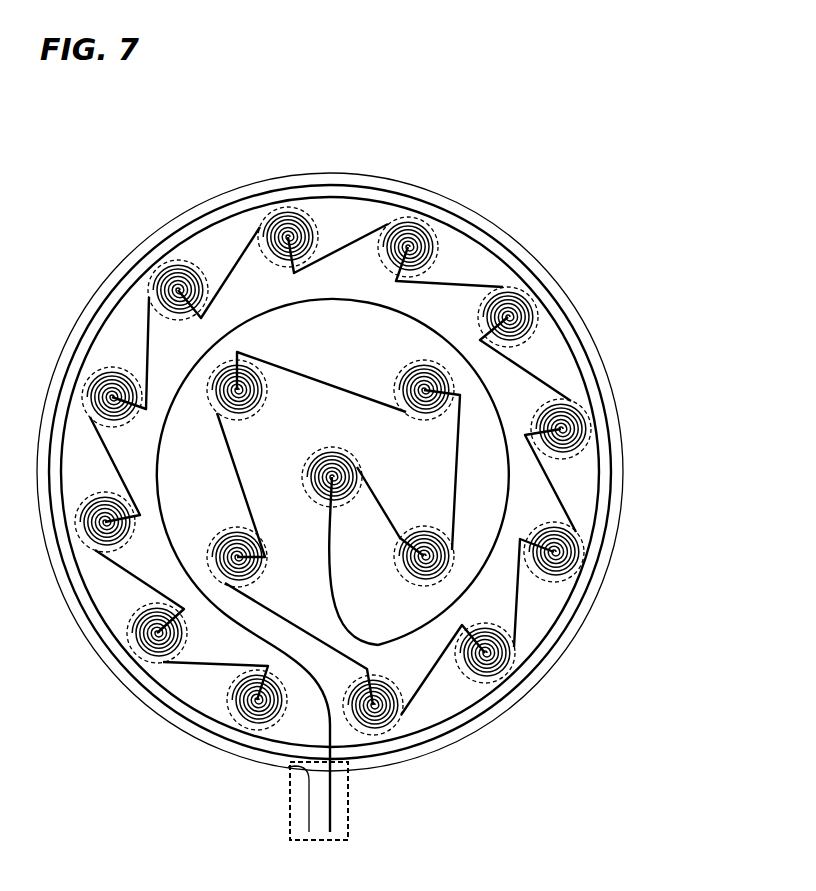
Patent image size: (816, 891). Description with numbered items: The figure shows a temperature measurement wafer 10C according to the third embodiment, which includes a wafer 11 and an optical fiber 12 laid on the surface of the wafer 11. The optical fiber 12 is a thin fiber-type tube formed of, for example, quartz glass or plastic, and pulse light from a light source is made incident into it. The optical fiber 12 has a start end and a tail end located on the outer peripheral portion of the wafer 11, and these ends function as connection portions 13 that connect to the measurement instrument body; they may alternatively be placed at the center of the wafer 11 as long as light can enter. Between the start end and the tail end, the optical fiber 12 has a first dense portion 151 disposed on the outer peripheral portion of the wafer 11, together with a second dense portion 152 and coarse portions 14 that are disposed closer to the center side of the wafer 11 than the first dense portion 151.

The temperature measurement wafer 10C is at (97, 172).
The wafer 11 is at (492, 220).
The optical fiber 12 is at (393, 508).
The connection portions 13 is at (352, 800).
The coarse portions 14 is at (556, 493).
The first dense portion 151 is at (598, 553).
The second dense portion 152 is at (553, 587).